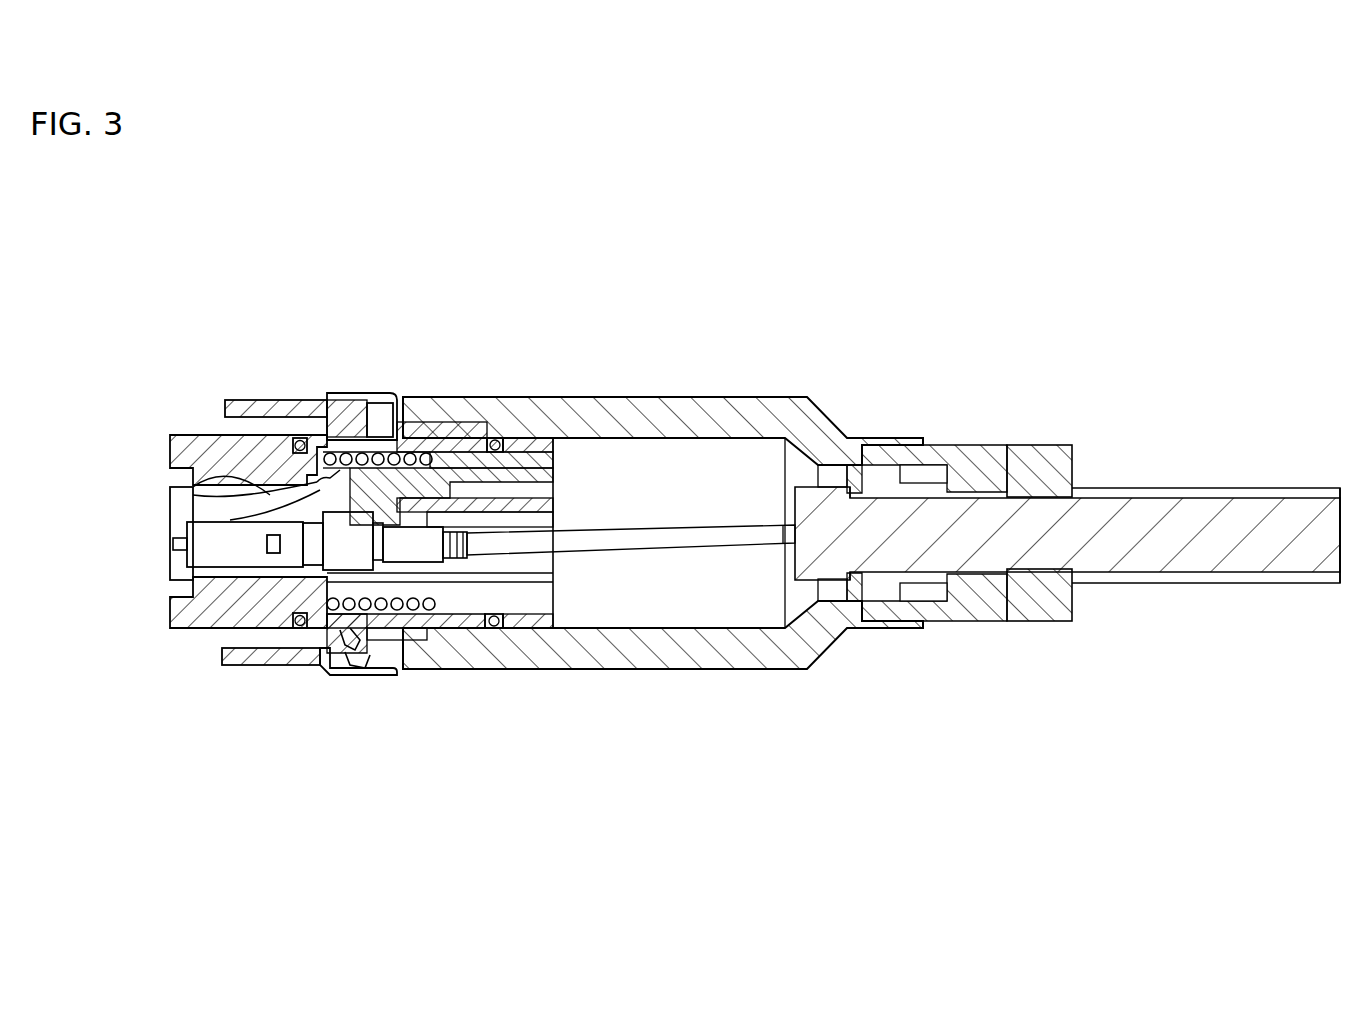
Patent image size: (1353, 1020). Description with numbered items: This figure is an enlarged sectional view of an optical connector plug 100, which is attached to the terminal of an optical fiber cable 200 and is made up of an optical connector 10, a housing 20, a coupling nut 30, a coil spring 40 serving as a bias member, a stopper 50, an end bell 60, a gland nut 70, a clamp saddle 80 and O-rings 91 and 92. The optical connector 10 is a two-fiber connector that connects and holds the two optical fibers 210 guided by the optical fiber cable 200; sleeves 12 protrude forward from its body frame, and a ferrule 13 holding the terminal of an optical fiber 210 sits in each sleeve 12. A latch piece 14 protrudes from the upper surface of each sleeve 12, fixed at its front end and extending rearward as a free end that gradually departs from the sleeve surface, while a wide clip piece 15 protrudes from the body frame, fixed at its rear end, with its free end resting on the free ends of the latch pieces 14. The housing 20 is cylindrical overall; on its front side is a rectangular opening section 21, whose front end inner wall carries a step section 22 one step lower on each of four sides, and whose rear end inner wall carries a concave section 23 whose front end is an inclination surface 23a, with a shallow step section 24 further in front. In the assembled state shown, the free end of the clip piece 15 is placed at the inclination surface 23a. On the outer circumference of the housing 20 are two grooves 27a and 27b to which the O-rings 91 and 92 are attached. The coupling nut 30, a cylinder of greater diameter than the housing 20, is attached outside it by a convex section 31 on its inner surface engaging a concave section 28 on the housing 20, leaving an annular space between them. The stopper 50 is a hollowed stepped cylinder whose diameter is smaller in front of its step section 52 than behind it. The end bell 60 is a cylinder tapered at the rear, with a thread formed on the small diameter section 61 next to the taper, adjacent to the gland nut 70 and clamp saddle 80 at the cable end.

The optical connector plug 100 is at (795, 395).
The optical connector 10 is at (372, 512).
The sleeve 12 is at (214, 630).
The ferrule 13 is at (170, 521).
The latch piece 14 is at (265, 479).
The clip piece 15 is at (358, 503).
The housing 20 is at (178, 433).
The opening section 21 is at (170, 556).
The step section 22 is at (222, 567).
The concave section 23 is at (318, 470).
The inclination surface 23a is at (292, 475).
The shallow step section 24 is at (272, 480).
The groove 27a is at (282, 628).
The groove 27b is at (506, 612).
The concave section 28 is at (348, 640).
The coupling nut 30 is at (322, 393).
The convex section 31 is at (353, 652).
The coil spring 40 is at (442, 628).
The stopper 50 is at (565, 447).
The step section 52 is at (447, 425).
The end bell 60 is at (708, 669).
The small diameter section 61 is at (910, 622).
The gland nut 70 is at (1000, 622).
The clamp saddle 80 is at (1040, 445).
The O-ring 91 is at (303, 630).
The O-ring 92 is at (493, 628).
The optical fiber cable 200 is at (1232, 488).
The optical fiber 210 is at (663, 527).